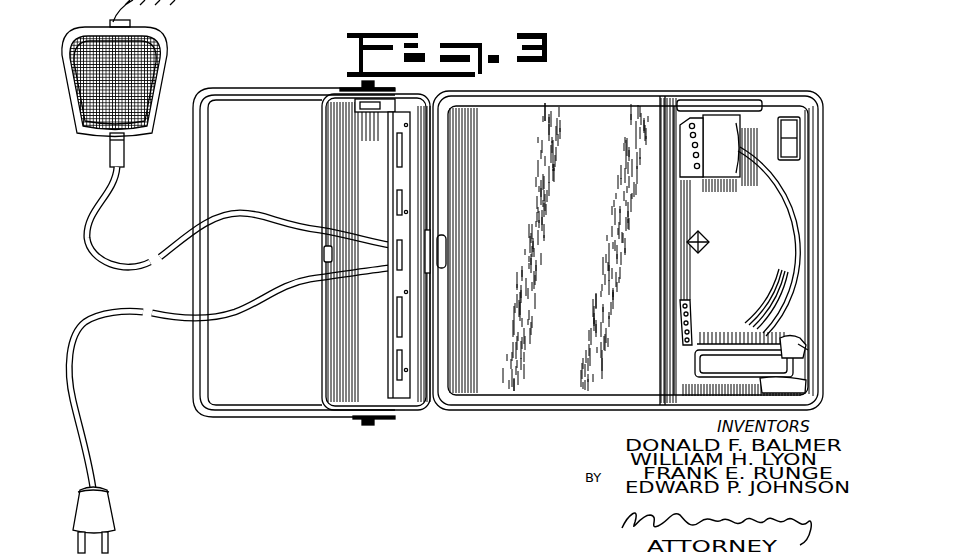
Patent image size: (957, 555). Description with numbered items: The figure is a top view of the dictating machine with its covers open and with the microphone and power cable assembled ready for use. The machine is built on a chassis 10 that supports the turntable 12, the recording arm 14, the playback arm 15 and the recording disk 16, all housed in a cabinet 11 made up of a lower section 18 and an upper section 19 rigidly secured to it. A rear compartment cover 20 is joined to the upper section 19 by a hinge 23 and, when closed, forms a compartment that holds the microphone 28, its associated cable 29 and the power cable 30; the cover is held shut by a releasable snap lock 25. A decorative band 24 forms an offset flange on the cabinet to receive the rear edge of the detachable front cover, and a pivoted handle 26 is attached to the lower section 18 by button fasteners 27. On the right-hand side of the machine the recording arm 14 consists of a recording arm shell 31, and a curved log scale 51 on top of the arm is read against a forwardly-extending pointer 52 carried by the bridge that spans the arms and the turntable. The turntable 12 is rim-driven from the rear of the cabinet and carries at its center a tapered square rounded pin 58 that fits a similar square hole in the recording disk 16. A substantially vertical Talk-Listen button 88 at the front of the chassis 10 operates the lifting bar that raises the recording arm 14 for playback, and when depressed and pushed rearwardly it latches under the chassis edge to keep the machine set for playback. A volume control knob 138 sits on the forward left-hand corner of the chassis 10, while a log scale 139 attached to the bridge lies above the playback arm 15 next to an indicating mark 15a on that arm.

The chassis 10 is at (773, 104).
The cabinet 11 is at (568, 96).
The turntable 12 is at (797, 222).
The recording arm 14 is at (727, 118).
The playback arm 15 is at (805, 349).
The indicating mark 15a is at (705, 366).
The recording disk 16 is at (783, 273).
The lower section 18 is at (320, 366).
The upper section 19 is at (590, 107).
The rear compartment cover 20 is at (445, 147).
The hinge 23 is at (405, 170).
The decorative band 24 is at (670, 92).
The releasable snap lock 25 is at (324, 253).
The pivoted handle 26 is at (253, 88).
The button fasteners 27 is at (362, 84).
The microphone 28 is at (167, 47).
The microphone cable 29 is at (98, 218).
The power cable 30 is at (78, 366).
The recording arm shell 31 is at (727, 170).
The curved log scale 51 is at (701, 133).
The pointer 52 is at (680, 170).
The tapered square rounded pin 58 is at (707, 240).
The Talk-Listen button 88 is at (793, 147).
The volume control knob 138 is at (800, 345).
The log scale 139 is at (690, 318).